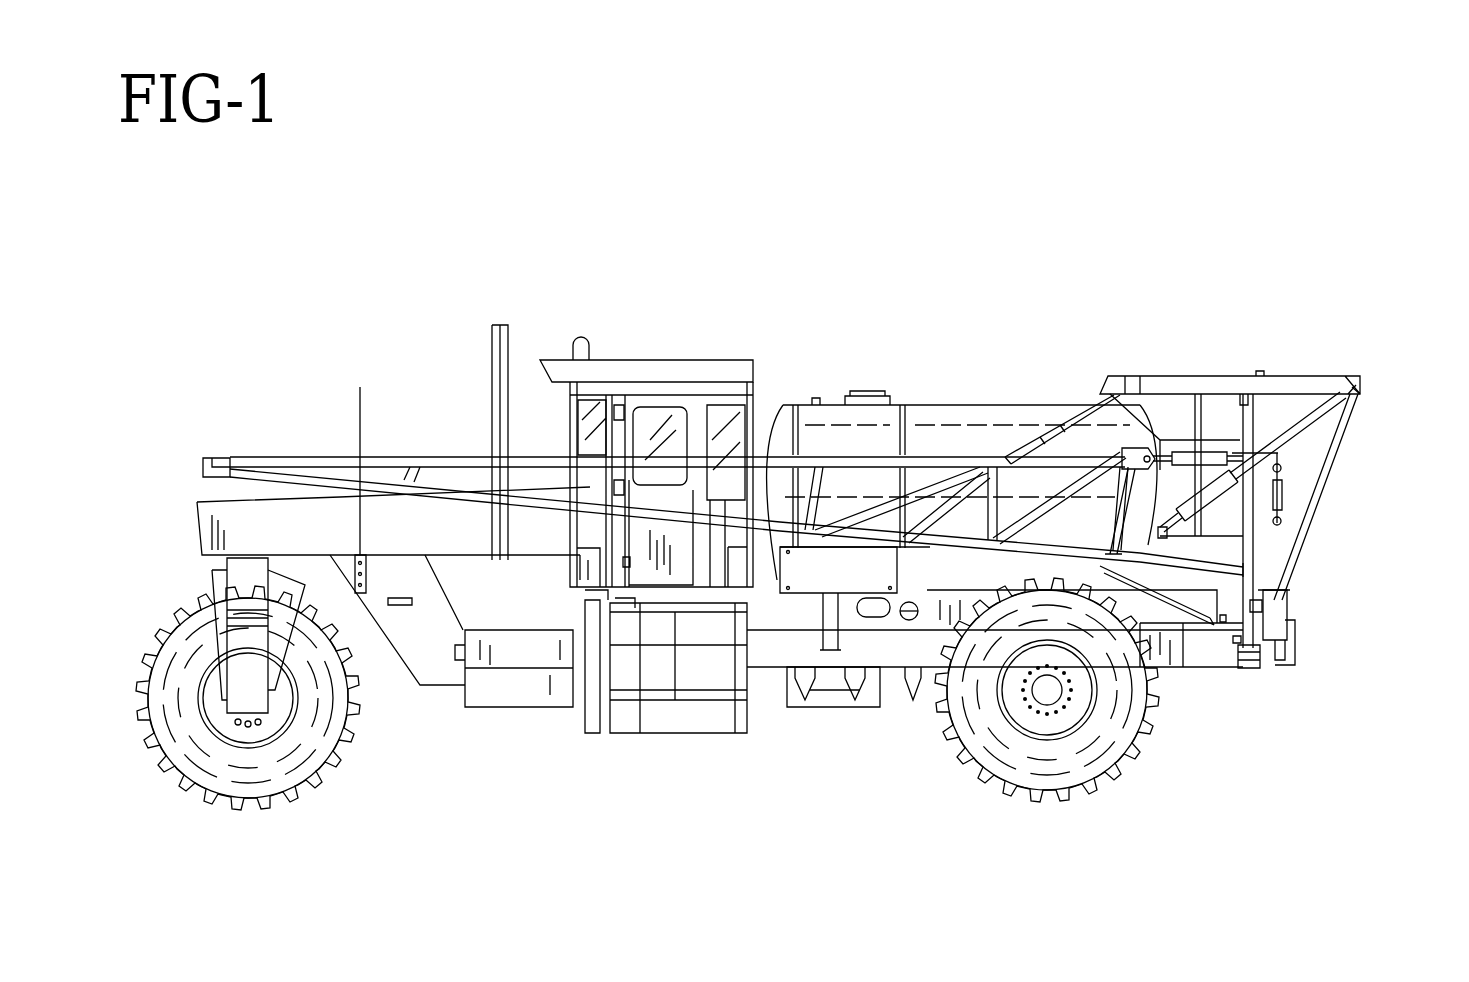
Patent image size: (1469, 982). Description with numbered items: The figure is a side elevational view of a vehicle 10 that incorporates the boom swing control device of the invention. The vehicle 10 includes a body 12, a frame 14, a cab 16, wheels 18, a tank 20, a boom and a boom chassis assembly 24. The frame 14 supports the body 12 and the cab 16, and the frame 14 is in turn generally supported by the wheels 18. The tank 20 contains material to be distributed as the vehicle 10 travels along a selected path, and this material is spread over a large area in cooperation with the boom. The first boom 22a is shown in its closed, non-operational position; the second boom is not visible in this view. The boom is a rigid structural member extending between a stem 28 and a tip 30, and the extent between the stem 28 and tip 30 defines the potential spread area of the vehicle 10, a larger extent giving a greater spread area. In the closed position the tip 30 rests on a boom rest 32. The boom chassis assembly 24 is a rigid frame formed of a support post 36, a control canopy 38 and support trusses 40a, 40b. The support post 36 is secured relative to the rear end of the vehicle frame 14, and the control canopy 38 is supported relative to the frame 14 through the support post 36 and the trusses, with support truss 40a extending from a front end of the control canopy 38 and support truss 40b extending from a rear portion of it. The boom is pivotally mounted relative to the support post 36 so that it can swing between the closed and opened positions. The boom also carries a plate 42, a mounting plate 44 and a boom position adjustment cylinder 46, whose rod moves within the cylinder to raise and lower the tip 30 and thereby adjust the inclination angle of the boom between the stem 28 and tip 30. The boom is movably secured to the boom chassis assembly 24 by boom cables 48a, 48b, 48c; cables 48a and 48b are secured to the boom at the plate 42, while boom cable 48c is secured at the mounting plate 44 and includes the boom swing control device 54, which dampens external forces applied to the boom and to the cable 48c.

The vehicle 10 is at (880, 360).
The body 12 is at (258, 505).
The frame 14 is at (895, 670).
The cab 16 is at (665, 340).
The wheels 18 is at (305, 792).
The tank 20 is at (978, 400).
The first boom 22a is at (448, 455).
The boom chassis assembly 24 is at (1236, 340).
The stem 28 is at (1200, 395).
The tip 30 is at (215, 456).
The boom rest 32 is at (358, 385).
The support post 36 is at (1258, 600).
The control canopy 38 is at (1183, 380).
The support truss 40a is at (1040, 397).
The support truss 40b is at (1260, 445).
The plate 42 is at (1284, 506).
The mounting plate 44 is at (1292, 446).
The boom position adjustment cylinder 46 is at (1133, 450).
The boom cable 48a is at (1280, 440).
The boom cable 48b is at (1093, 395).
The boom cable 48c is at (1355, 418).
The boom swing control device 54 is at (1255, 547).